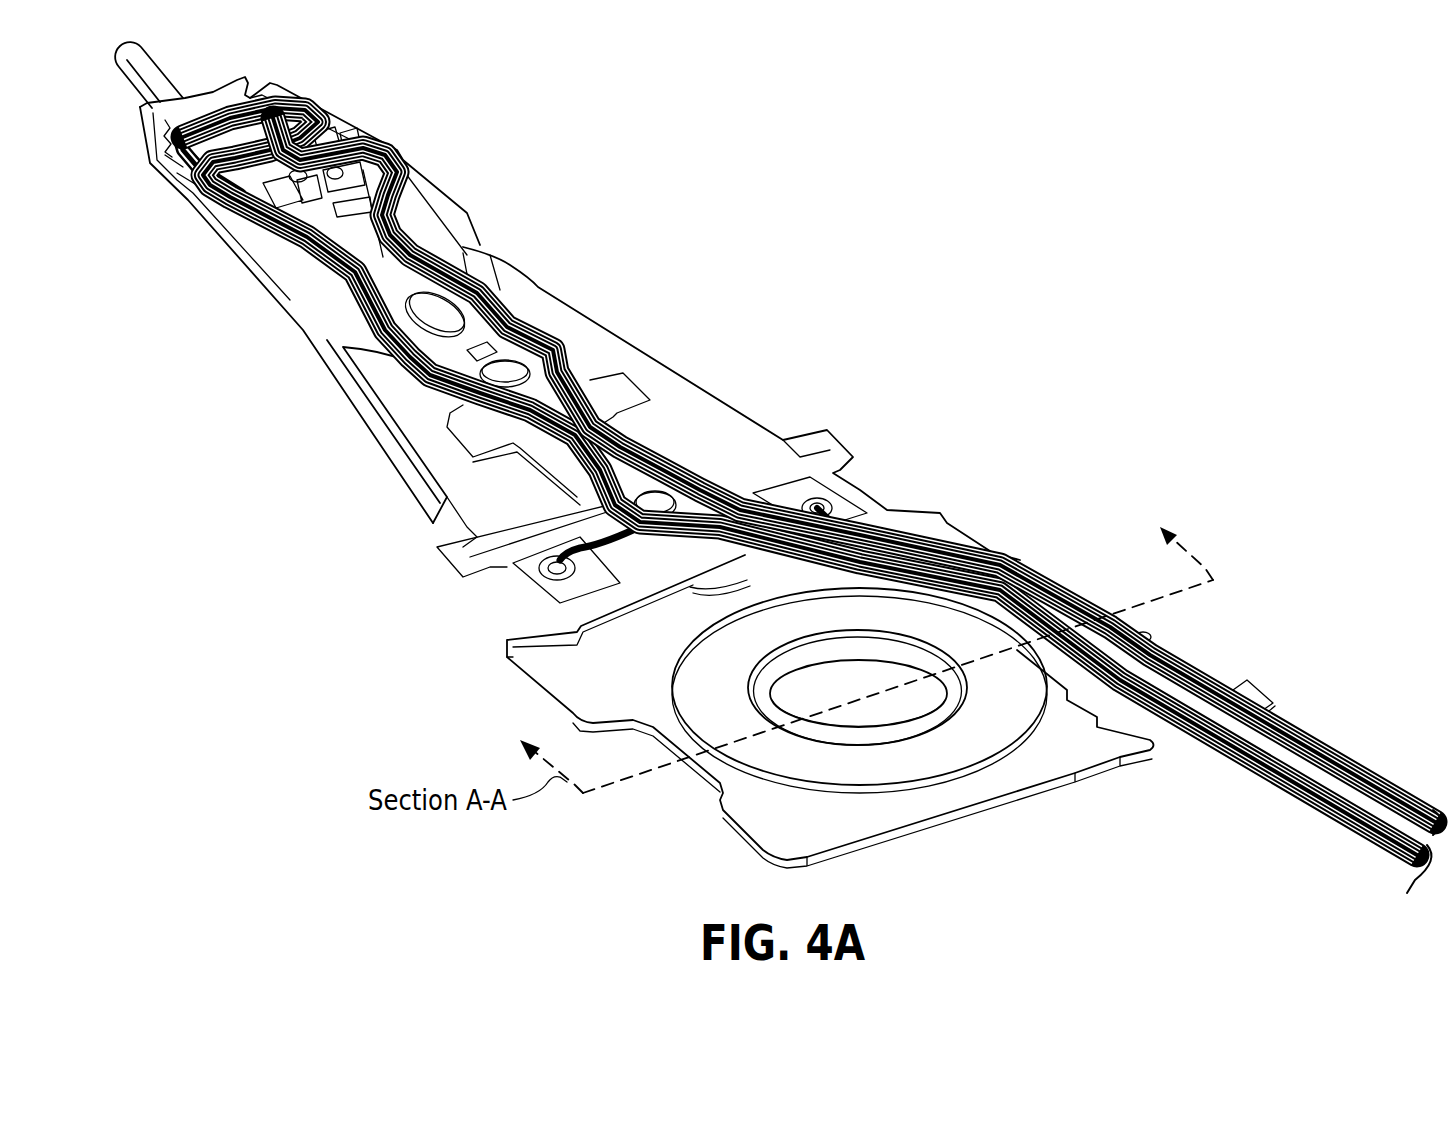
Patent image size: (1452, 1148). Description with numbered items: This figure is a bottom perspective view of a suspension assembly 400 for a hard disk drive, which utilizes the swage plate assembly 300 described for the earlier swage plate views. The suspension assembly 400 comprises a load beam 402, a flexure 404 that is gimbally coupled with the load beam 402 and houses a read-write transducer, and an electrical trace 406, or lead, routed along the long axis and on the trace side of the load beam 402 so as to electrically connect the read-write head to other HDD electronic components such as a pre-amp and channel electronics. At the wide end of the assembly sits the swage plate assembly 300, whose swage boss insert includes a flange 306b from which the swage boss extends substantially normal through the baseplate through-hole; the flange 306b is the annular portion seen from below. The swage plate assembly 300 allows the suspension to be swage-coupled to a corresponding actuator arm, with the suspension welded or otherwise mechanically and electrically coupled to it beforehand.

The suspension assembly 400 is at (781, 467).
The load beam 402 is at (385, 420).
The flexure 404 is at (510, 277).
The electrical trace 406 is at (555, 365).
The swage plate assembly 300 is at (830, 716).
The flange 306b is at (893, 765).